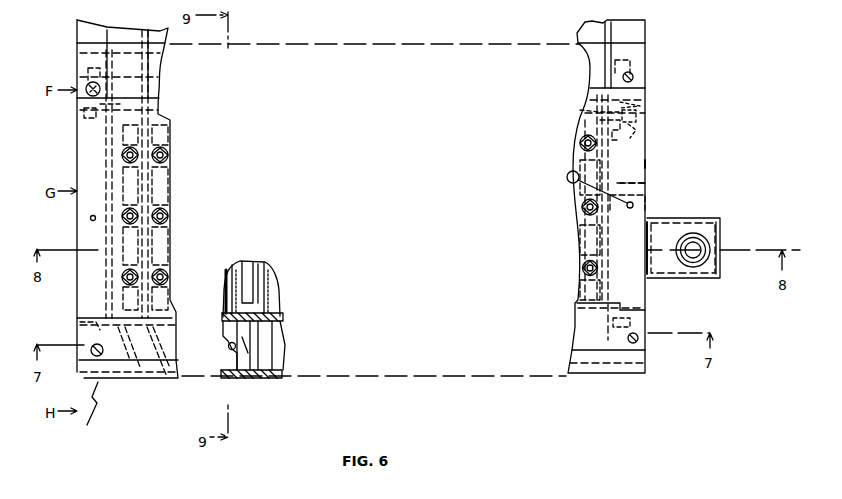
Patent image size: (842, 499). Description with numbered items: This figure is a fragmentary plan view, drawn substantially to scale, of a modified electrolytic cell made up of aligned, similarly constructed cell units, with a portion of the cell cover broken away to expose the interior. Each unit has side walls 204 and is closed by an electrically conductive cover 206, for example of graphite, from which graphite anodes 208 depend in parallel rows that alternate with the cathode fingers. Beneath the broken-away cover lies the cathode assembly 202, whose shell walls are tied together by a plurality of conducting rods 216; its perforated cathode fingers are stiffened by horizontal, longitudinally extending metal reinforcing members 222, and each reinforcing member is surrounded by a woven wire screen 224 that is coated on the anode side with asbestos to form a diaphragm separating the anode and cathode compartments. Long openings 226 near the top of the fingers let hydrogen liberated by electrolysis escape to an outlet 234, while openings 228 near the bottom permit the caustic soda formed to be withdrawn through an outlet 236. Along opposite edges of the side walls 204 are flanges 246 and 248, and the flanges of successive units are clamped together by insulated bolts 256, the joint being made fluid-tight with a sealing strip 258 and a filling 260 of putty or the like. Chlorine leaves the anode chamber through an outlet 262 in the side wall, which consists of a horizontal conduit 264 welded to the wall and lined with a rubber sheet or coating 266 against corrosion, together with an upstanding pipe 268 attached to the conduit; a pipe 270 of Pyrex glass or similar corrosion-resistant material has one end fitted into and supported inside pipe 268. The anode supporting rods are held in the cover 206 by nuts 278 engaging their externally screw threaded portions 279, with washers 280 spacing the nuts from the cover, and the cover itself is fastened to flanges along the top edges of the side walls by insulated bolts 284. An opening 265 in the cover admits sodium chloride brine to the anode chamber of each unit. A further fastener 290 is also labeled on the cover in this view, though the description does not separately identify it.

The cathode assembly 202 is at (268, 319).
The side walls 204 is at (645, 183).
The cover 206 is at (645, 161).
The anodes 208 is at (258, 266).
The conducting rods 216 is at (248, 353).
The reinforcing members 222 is at (245, 264).
The woven wire screens 224 is at (230, 270).
The openings 226 is at (133, 367).
The openings 228 is at (163, 365).
The outlet 234 is at (628, 325).
The outlet 236 is at (78, 322).
The flange 246 is at (647, 96).
The flange 248 is at (640, 118).
The insulated bolts 256 is at (632, 135).
The sealing strip 258 is at (640, 107).
The filling 260 is at (585, 110).
The outlet 262 is at (703, 250).
The horizontal conduit 264 is at (667, 220).
The opening 265 is at (576, 165).
The sheet or coating 266 is at (702, 223).
The upstanding pipe 268 is at (707, 238).
The pipe 270 is at (228, 346).
The nuts 278 is at (582, 268).
The screw threaded portions 279 is at (583, 276).
The washers 280 is at (582, 261).
The insulated bolts 284 is at (568, 181).
The screw 290 is at (632, 76).